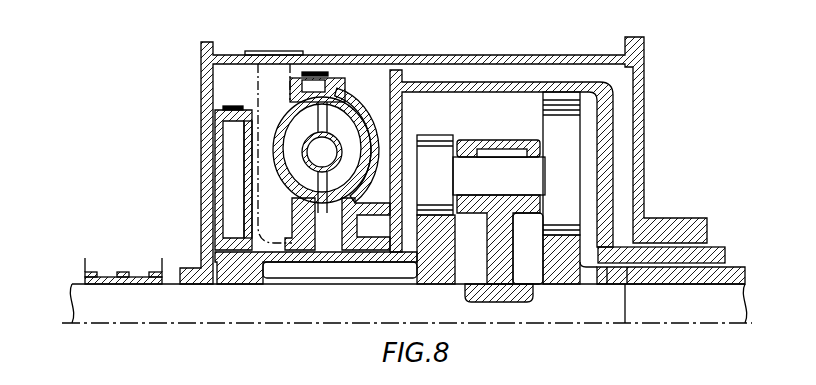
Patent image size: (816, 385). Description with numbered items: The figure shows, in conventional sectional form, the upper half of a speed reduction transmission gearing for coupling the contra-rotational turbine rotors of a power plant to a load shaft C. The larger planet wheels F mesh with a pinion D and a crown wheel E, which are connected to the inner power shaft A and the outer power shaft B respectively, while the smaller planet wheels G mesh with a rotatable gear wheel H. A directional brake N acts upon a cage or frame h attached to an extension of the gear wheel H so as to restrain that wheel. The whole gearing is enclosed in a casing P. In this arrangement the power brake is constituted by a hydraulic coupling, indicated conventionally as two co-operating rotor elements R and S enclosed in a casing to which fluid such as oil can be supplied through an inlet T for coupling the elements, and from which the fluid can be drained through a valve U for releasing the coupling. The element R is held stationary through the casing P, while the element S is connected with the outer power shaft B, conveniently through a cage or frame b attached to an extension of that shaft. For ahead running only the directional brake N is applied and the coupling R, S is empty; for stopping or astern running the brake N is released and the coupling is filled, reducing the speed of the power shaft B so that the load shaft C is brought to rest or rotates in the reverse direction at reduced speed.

The casing P is at (433, 57).
The inlet T is at (282, 54).
The directional brake N is at (233, 164).
The cage or frame h is at (247, 209).
The rotor element R is at (302, 144).
The rotor element S is at (352, 144).
The valve U is at (319, 71).
The cage or frame b is at (401, 127).
The smaller planet wheels G is at (435, 175).
The gear wheel H is at (444, 252).
The pinion D is at (503, 260).
The larger planet wheels F is at (551, 122).
The crown wheel E is at (575, 99).
The outer power shaft B is at (713, 247).
The inner power shaft A is at (684, 281).
The load shaft C is at (371, 317).